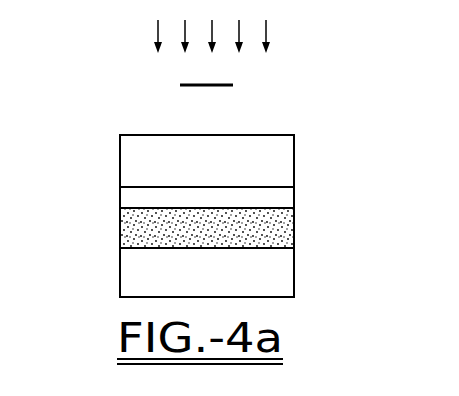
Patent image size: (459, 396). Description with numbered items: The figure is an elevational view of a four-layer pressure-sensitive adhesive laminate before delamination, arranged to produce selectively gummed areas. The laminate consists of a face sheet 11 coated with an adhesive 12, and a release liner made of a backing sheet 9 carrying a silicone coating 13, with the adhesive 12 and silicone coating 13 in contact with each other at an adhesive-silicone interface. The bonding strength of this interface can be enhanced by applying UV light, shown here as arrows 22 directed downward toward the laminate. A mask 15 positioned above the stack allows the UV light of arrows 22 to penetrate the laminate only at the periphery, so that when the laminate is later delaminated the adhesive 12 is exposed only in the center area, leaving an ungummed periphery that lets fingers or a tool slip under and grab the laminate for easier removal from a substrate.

The backing sheet 9 is at (294, 162).
The silicone coating 13 is at (294, 198).
The adhesive 12 is at (294, 227).
The face sheet 11 is at (294, 271).
The mask 15 is at (182, 86).
The arrows 22 is at (148, 29).